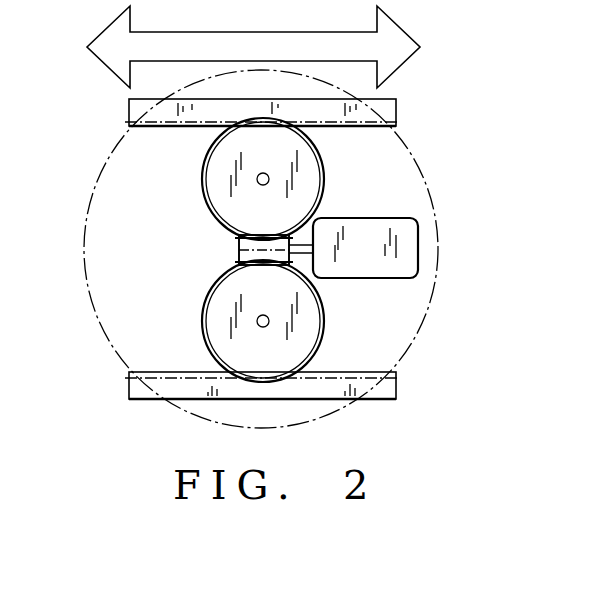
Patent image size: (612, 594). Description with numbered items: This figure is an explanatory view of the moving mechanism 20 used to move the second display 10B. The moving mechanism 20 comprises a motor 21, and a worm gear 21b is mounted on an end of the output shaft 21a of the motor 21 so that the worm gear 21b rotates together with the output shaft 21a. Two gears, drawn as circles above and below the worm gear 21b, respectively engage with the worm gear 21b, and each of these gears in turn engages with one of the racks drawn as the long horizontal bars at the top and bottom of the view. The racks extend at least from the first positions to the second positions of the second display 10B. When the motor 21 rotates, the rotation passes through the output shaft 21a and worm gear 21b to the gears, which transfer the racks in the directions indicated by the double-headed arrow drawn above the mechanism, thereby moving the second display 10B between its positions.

The second display 10B is at (423, 149).
The moving mechanism 20 is at (362, 290).
The motor 21 is at (347, 219).
The output shaft 21a is at (293, 264).
The worm gear 21b is at (239, 247).